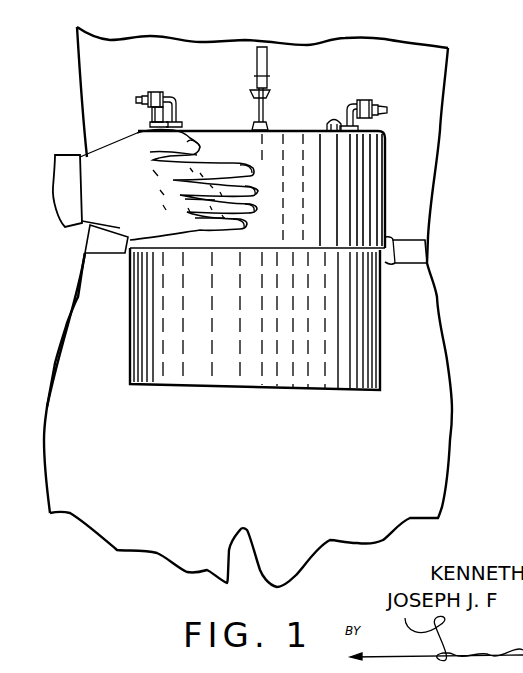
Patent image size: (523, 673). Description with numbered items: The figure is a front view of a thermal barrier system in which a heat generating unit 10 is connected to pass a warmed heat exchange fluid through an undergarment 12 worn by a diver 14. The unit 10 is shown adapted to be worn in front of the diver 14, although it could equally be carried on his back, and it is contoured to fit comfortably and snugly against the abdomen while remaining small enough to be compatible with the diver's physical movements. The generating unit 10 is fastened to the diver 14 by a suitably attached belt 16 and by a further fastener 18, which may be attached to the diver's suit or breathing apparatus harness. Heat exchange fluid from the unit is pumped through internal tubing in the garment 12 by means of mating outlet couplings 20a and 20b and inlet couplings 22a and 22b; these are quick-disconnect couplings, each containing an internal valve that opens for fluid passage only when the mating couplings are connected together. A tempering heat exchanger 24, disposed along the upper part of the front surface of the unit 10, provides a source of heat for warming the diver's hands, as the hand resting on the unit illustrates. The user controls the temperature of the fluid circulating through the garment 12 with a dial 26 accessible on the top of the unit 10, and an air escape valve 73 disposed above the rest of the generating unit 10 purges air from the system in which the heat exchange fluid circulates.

The heat generating unit 10 is at (383, 291).
The undergarment 12 is at (366, 71).
The diver 14 is at (53, 346).
The belt 16 is at (413, 248).
The fastener 18 is at (267, 80).
The outlet coupling 20a is at (170, 98).
The outlet coupling 20b is at (137, 96).
The inlet coupling 22a is at (357, 101).
The inlet coupling 22b is at (388, 110).
The tempering heat exchanger 24 is at (320, 212).
The dial 26 is at (327, 124).
The air escape valve 73 is at (152, 113).